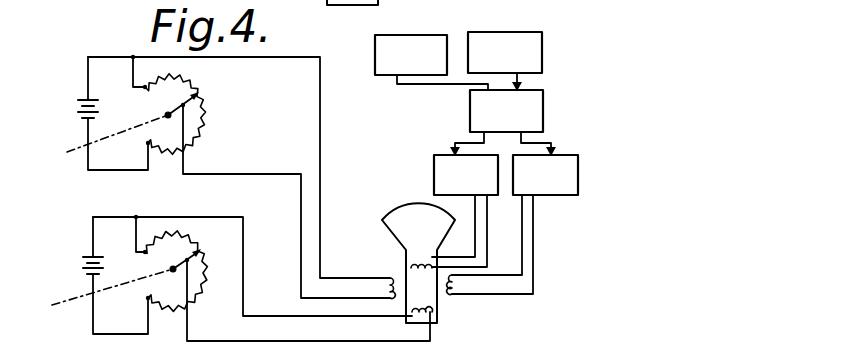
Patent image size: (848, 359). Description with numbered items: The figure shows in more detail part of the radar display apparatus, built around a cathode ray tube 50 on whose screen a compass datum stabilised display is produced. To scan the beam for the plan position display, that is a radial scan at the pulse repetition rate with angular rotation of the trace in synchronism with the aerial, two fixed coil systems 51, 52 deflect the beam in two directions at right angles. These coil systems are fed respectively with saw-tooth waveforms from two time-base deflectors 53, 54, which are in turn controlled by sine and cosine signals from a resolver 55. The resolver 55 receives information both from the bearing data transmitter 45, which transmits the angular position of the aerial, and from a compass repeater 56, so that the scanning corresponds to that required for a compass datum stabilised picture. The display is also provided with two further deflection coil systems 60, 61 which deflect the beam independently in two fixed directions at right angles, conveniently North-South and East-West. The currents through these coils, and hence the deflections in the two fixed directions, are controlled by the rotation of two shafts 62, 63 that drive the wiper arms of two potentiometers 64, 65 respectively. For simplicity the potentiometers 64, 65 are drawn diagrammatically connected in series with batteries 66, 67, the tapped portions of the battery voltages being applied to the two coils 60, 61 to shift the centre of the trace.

The bearing data transmitter 45 is at (542, 57).
The cathode ray tube 50 is at (415, 203).
The fixed coil system 51 is at (427, 268).
The fixed coil system 52 is at (452, 287).
The time-base deflector 53 is at (443, 156).
The time-base deflector 54 is at (565, 155).
The resolver 55 is at (471, 102).
The compass repeater 56 is at (380, 77).
The deflection coil system 60 is at (395, 278).
The deflection coil system 61 is at (438, 313).
The shaft 62 is at (164, 113).
The shaft 63 is at (169, 269).
The potentiometer 64 is at (200, 132).
The potentiometer 65 is at (207, 270).
The battery 66 is at (82, 100).
The battery 67 is at (88, 257).